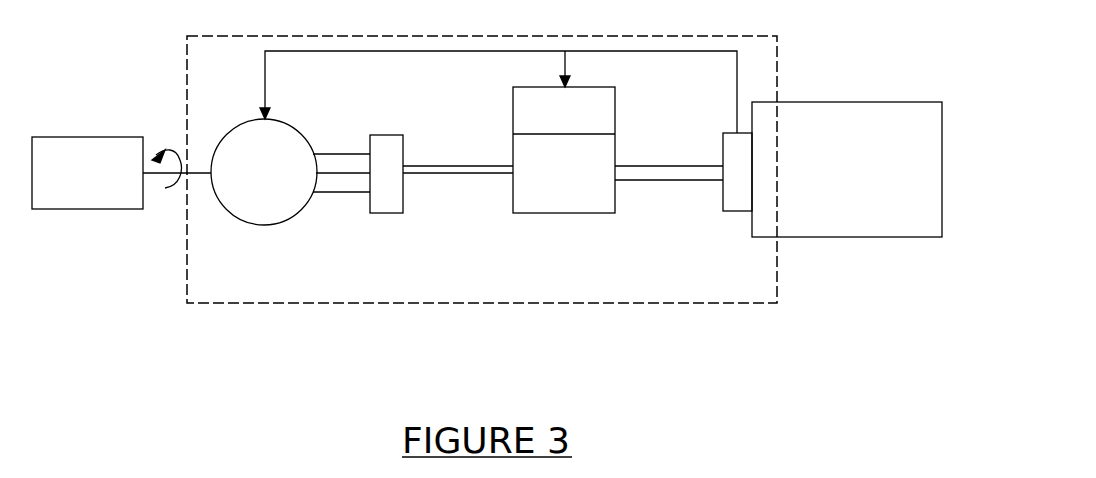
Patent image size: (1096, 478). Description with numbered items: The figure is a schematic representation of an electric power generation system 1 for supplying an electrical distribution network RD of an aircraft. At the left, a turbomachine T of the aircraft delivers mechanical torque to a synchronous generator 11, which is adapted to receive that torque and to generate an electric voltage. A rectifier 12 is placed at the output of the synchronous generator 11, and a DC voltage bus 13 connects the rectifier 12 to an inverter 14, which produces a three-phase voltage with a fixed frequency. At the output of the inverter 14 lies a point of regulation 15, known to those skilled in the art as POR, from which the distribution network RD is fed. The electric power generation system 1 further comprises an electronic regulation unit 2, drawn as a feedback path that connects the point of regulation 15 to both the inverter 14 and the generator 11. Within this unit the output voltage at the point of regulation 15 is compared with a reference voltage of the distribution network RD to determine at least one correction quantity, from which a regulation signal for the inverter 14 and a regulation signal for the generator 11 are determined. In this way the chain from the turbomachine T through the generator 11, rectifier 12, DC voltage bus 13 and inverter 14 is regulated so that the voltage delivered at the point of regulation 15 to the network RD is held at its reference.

The electric power generation system 1 is at (622, 303).
The electronic regulation unit 2 is at (513, 110).
The synchronous generator 11 is at (303, 210).
The rectifier 12 is at (388, 213).
The DC voltage bus 13 is at (442, 175).
The inverter 14 is at (568, 213).
The point of regulation 15 is at (738, 211).
The turbomachine T is at (77, 137).
The distribution network RD is at (845, 102).